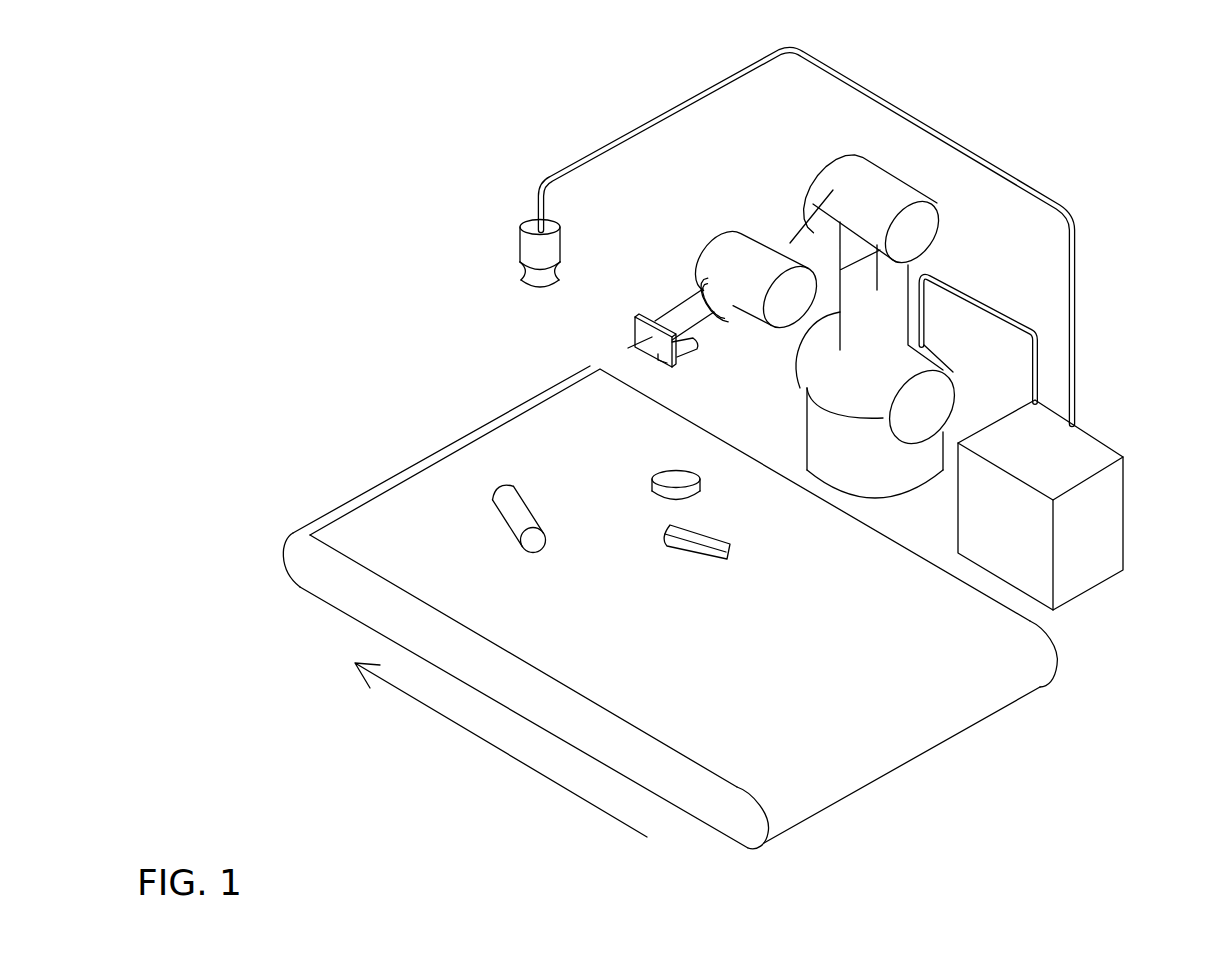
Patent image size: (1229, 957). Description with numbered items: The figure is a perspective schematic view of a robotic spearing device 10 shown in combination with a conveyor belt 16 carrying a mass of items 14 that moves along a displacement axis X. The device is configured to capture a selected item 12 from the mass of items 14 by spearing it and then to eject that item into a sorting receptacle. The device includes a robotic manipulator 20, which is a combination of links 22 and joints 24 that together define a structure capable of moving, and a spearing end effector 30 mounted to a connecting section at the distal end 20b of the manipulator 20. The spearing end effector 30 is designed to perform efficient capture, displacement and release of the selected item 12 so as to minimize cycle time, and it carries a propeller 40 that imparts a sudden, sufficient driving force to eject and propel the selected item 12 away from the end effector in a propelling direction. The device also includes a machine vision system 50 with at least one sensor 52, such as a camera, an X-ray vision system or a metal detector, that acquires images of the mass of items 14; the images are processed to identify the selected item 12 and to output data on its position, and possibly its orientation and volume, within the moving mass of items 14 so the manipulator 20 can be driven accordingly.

The robotic spearing device 10 is at (347, 138).
The selected item 12 is at (698, 550).
The mass of items 14 is at (672, 636).
The conveyor belt 16 is at (965, 627).
The robotic manipulator 20 is at (826, 256).
The distal end 20b is at (697, 287).
The links 22 is at (877, 293).
The joints 24 is at (947, 350).
The spearing end effector 30 is at (600, 341).
The propeller 40 is at (683, 346).
The machine vision system 50 is at (1093, 277).
The sensor 52 is at (519, 251).